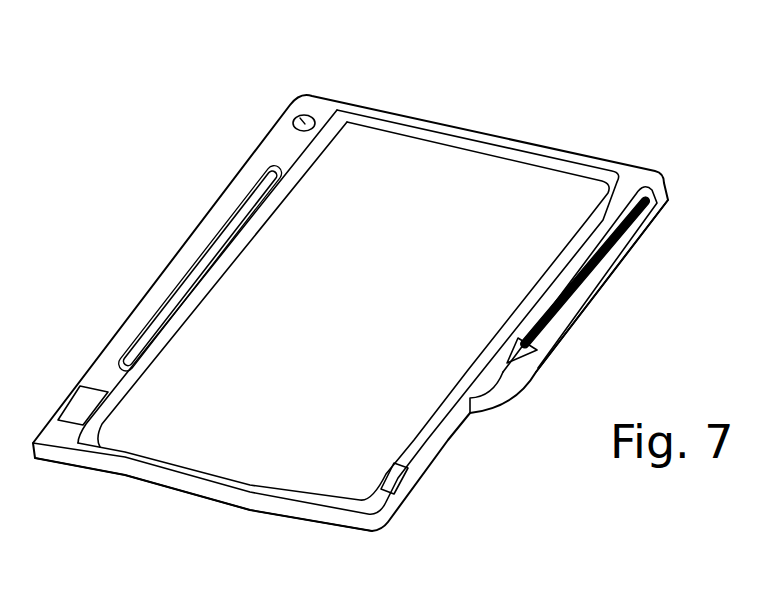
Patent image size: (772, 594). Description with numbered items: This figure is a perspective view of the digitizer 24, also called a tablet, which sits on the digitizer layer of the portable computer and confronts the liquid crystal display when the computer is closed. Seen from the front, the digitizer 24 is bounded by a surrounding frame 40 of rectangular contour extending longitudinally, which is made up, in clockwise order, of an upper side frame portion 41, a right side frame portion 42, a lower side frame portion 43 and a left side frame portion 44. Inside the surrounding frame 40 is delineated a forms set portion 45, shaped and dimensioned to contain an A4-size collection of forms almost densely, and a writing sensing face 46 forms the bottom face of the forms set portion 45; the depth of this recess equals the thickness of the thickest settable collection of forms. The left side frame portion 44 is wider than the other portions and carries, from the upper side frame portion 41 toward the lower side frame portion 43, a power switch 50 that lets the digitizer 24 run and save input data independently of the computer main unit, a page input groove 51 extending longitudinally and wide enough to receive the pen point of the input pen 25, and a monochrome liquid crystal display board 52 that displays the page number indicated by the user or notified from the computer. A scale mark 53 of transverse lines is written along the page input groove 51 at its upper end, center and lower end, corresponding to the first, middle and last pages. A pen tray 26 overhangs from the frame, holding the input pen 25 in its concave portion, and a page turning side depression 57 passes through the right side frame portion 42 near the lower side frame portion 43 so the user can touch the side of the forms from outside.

The digitizer 24 is at (465, 55).
The surrounding frame 40 is at (538, 136).
The upper side frame portion 41 is at (397, 116).
The right side frame portion 42 is at (462, 424).
The lower side frame portion 43 is at (288, 512).
The left side frame portion 44 is at (245, 170).
The forms set portion 45 is at (220, 455).
The writing sensing face 46 is at (153, 447).
The power switch 50 is at (295, 112).
The page input groove 51 is at (225, 232).
The monochrome liquid crystal display board 52 is at (80, 412).
The scale mark 53 is at (113, 363).
The page turning side depression 57 is at (402, 492).
The input pen 25 is at (624, 236).
The pen tray 26 is at (578, 312).